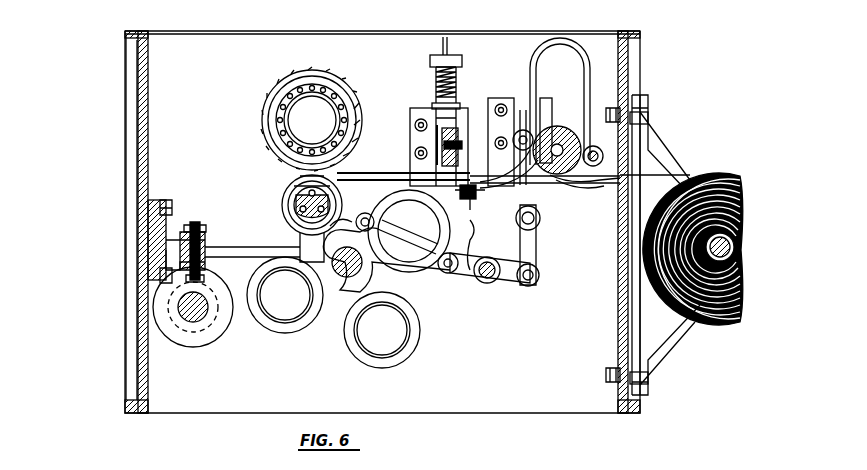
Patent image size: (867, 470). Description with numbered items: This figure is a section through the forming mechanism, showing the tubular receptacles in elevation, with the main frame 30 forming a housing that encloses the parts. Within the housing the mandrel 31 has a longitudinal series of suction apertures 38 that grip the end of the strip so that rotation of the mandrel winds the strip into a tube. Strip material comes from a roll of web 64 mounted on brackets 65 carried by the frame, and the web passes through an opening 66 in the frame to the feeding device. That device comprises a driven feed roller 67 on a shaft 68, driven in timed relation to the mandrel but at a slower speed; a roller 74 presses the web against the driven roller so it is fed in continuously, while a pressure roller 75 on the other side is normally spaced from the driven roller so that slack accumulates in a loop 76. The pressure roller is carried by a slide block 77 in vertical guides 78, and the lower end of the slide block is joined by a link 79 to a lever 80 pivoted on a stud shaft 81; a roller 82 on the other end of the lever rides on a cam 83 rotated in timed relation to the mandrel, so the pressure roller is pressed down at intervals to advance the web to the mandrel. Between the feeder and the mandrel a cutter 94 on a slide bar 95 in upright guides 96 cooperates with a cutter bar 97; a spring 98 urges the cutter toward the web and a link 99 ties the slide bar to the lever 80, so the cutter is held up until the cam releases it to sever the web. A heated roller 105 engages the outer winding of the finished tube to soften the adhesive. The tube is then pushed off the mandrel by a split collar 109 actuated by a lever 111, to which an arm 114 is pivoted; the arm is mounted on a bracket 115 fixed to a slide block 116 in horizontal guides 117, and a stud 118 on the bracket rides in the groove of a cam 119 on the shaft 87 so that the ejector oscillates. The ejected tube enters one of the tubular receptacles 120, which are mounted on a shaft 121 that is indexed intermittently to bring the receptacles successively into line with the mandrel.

The main frame 30 is at (140, 345).
The mandrel 31 is at (296, 200).
The apertures 38 is at (300, 180).
The web 64 is at (648, 168).
The brackets 65 is at (665, 330).
The opening 66 is at (625, 170).
The driven feed roller 67 is at (557, 185).
The shaft 68 is at (560, 130).
The roller 74 is at (596, 146).
The pressure roller 75 is at (520, 108).
The loop 76 is at (556, 40).
The slide block 77 is at (520, 200).
The vertical guides 78 is at (510, 104).
The link 79 is at (536, 255).
The lever 80 is at (462, 278).
The stud shaft 81 is at (495, 280).
The roller 82 is at (386, 212).
The cam 83 is at (356, 218).
The shaft 87 is at (192, 318).
The cutter 94 is at (462, 160).
The slide bar 95 is at (437, 142).
The upright guides 96 is at (425, 118).
The cutter bar 97 is at (470, 205).
The spring 98 is at (435, 80).
The link 99 is at (446, 274).
The heated roller 105 is at (285, 85).
The split collar 109 is at (292, 227).
The lever 111 is at (252, 258).
The arm 114 is at (166, 240).
The bracket 115 is at (188, 245).
The slide block 116 is at (150, 228).
The horizontal guides 117 is at (166, 205).
The stud 118 is at (145, 300).
The cam 119 is at (218, 330).
The tubular receptacles 120 is at (395, 270).
The shaft 121 is at (343, 276).